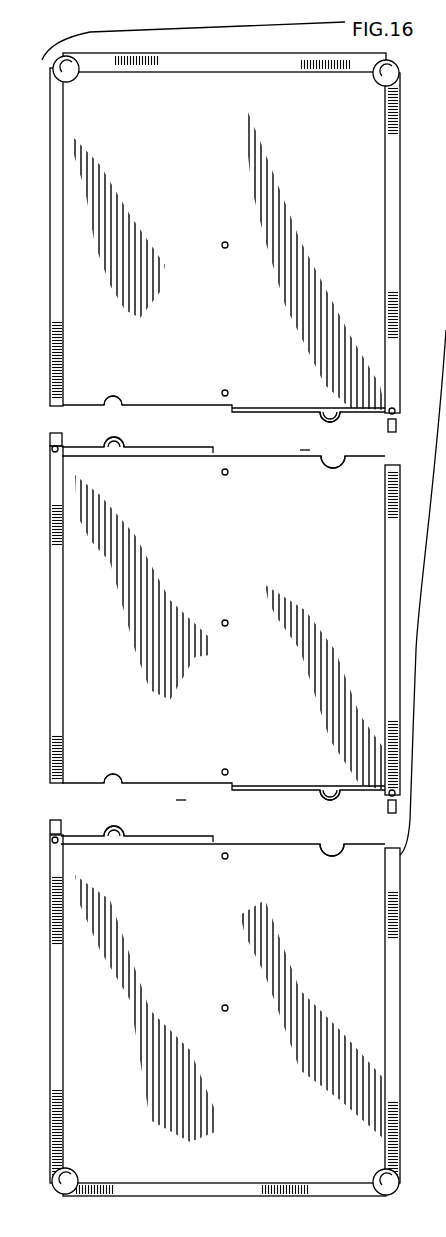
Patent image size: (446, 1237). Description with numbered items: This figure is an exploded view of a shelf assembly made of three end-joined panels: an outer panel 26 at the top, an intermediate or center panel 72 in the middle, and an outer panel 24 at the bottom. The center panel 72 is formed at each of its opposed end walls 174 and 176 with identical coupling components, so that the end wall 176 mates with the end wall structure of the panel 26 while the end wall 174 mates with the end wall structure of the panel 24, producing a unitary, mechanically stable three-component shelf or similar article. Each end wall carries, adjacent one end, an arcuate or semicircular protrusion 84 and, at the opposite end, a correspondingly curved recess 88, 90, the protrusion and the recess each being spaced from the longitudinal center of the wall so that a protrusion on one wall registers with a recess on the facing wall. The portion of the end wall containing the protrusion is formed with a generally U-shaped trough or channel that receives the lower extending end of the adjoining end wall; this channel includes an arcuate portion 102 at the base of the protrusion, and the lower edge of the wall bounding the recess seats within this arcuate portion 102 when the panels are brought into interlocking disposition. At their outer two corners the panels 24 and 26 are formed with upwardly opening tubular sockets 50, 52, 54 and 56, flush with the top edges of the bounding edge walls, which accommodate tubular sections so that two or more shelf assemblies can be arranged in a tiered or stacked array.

The panel 24 is at (362, 978).
The panel 26 is at (348, 237).
The upwardly opening tubular socket 50 is at (388, 1180).
The upwardly opening tubular socket 52 is at (67, 1180).
The upwardly opening tubular socket 54 is at (377, 84).
The upwardly opening tubular socket 56 is at (78, 76).
The intermediate panel 72 is at (366, 582).
The protrusion 84 is at (128, 440).
The recess 88 is at (112, 397).
The recess 90 is at (333, 463).
The arcuate portion of channel 102 is at (342, 424).
The end wall 174 is at (180, 800).
The end wall 176 is at (304, 451).